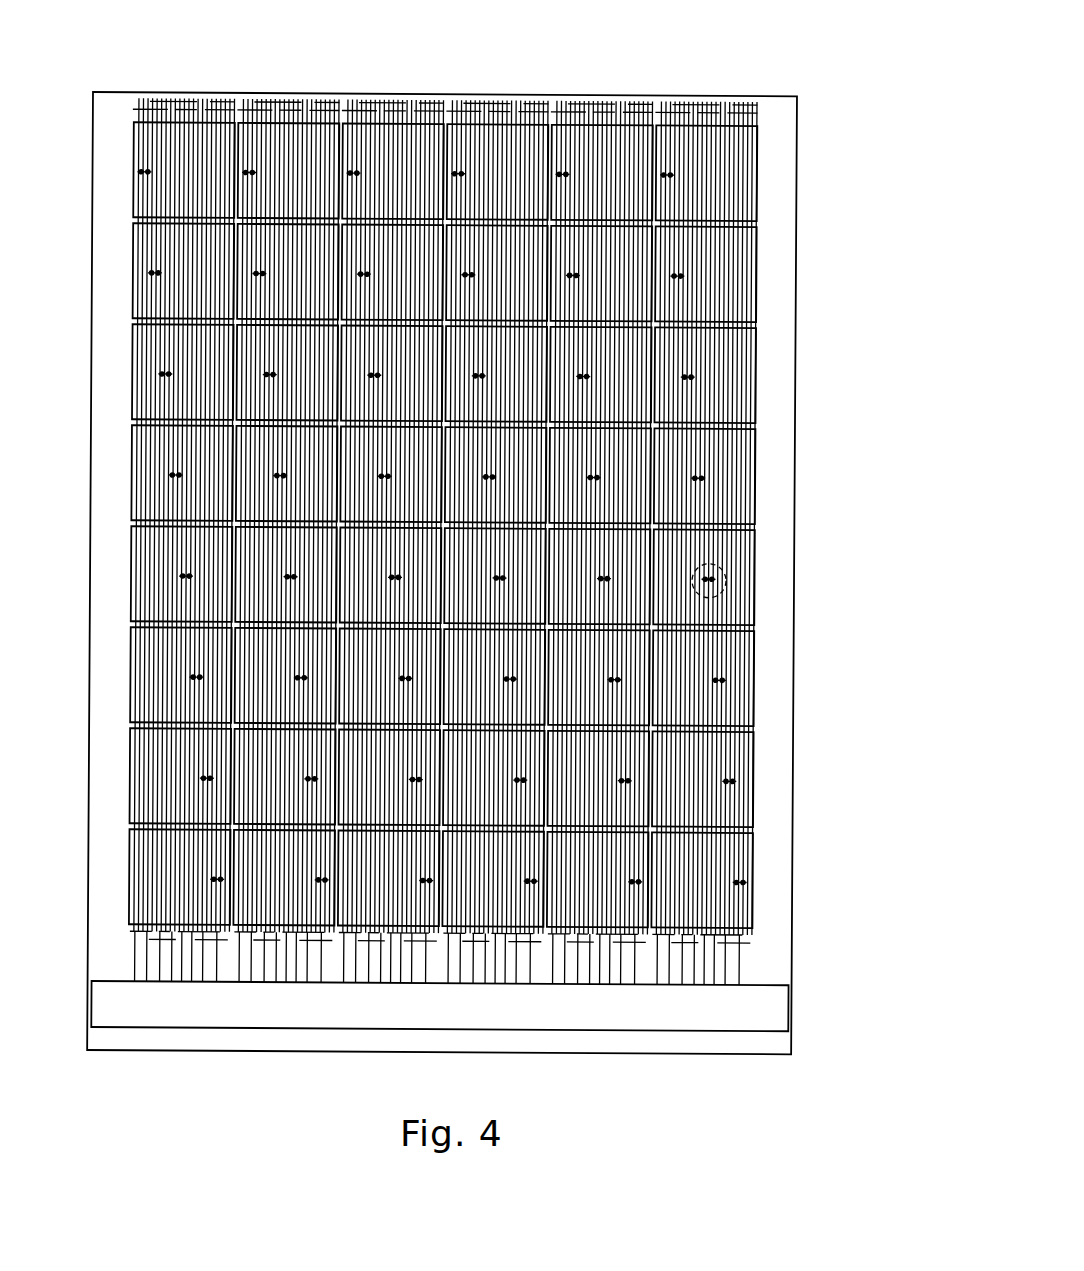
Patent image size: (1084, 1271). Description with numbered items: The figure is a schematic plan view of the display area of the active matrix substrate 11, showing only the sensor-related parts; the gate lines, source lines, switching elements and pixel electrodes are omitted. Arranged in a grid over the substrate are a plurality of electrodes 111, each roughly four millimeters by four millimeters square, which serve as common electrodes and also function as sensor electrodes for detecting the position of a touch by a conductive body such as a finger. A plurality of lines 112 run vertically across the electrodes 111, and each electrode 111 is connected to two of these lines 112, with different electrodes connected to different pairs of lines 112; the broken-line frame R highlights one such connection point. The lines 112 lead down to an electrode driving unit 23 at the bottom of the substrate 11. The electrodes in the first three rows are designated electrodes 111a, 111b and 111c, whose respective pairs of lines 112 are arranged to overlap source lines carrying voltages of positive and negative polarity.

The active matrix substrate 11 is at (473, 541).
The electrodes 111 is at (443, 541).
The electrode 111a is at (445, 171).
The electrode 111b is at (445, 272).
The electrode 111c is at (444, 373).
The lines 112 is at (443, 541).
The electrode driving unit 23 is at (439, 1006).
The broken-line frame R is at (709, 581).